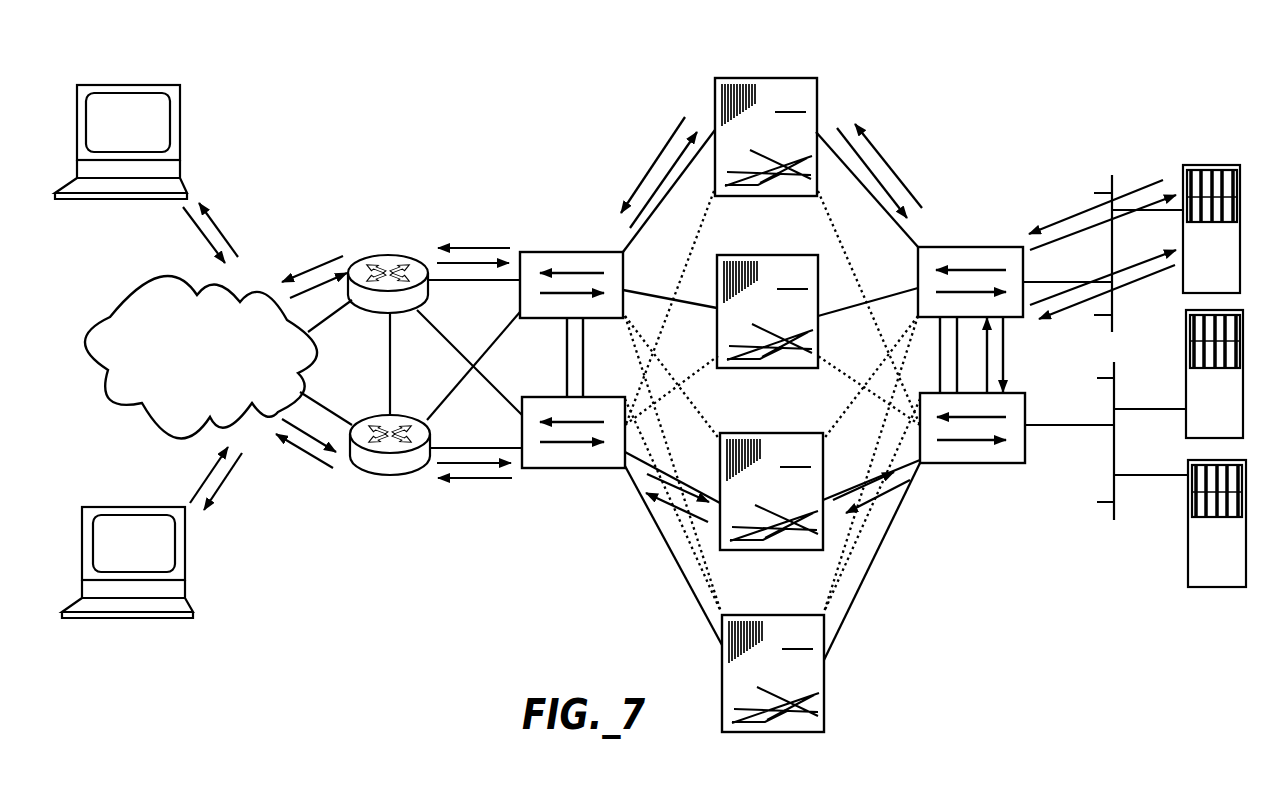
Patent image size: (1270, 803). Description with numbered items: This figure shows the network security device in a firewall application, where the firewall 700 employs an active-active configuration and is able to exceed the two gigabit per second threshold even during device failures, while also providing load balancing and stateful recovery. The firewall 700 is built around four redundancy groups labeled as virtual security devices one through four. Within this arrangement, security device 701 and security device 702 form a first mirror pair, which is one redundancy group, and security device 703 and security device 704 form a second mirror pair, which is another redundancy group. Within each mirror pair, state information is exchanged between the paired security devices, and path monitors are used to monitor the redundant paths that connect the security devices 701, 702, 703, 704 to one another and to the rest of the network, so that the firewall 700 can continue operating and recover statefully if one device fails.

The firewall 700 is at (648, 68).
The security device 701 is at (817, 93).
The security device 702 is at (820, 327).
The security device 703 is at (825, 537).
The security device 704 is at (825, 693).